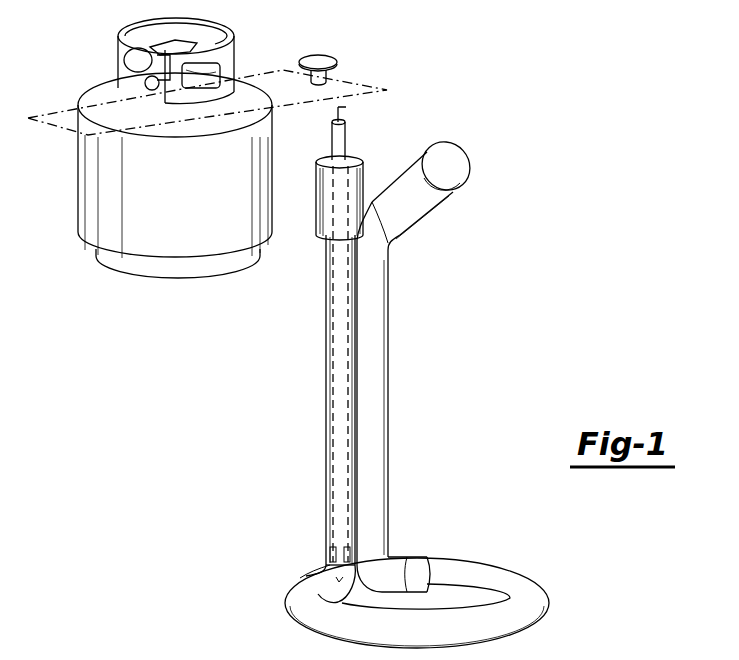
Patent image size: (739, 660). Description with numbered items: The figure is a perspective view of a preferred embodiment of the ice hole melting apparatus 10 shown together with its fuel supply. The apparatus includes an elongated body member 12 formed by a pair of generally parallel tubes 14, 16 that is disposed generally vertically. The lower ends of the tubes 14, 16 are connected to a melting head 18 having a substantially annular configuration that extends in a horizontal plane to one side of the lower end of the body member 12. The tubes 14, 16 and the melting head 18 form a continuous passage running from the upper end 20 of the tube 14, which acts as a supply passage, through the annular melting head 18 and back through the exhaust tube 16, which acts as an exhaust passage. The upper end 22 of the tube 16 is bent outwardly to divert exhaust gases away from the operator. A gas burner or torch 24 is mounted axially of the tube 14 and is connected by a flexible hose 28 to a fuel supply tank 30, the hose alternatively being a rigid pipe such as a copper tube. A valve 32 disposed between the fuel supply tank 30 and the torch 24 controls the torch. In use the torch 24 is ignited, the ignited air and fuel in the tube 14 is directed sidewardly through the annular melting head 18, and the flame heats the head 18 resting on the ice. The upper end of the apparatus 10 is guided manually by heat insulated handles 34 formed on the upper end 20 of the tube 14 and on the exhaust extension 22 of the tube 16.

The ice hole melting apparatus 10 is at (436, 265).
The elongated body member 12 is at (387, 385).
The supply tube 14 is at (341, 447).
The exhaust tube 16 is at (370, 446).
The melting head 18 is at (468, 575).
The upper end of supply tube 20 is at (365, 172).
The upper end of exhaust tube 22 is at (427, 148).
The gas burner or torch 24 is at (347, 138).
The flexible hose 28 is at (270, 74).
The fuel supply tank 30 is at (190, 214).
The valve 32 is at (331, 58).
The heat insulated handles 34 is at (325, 210).